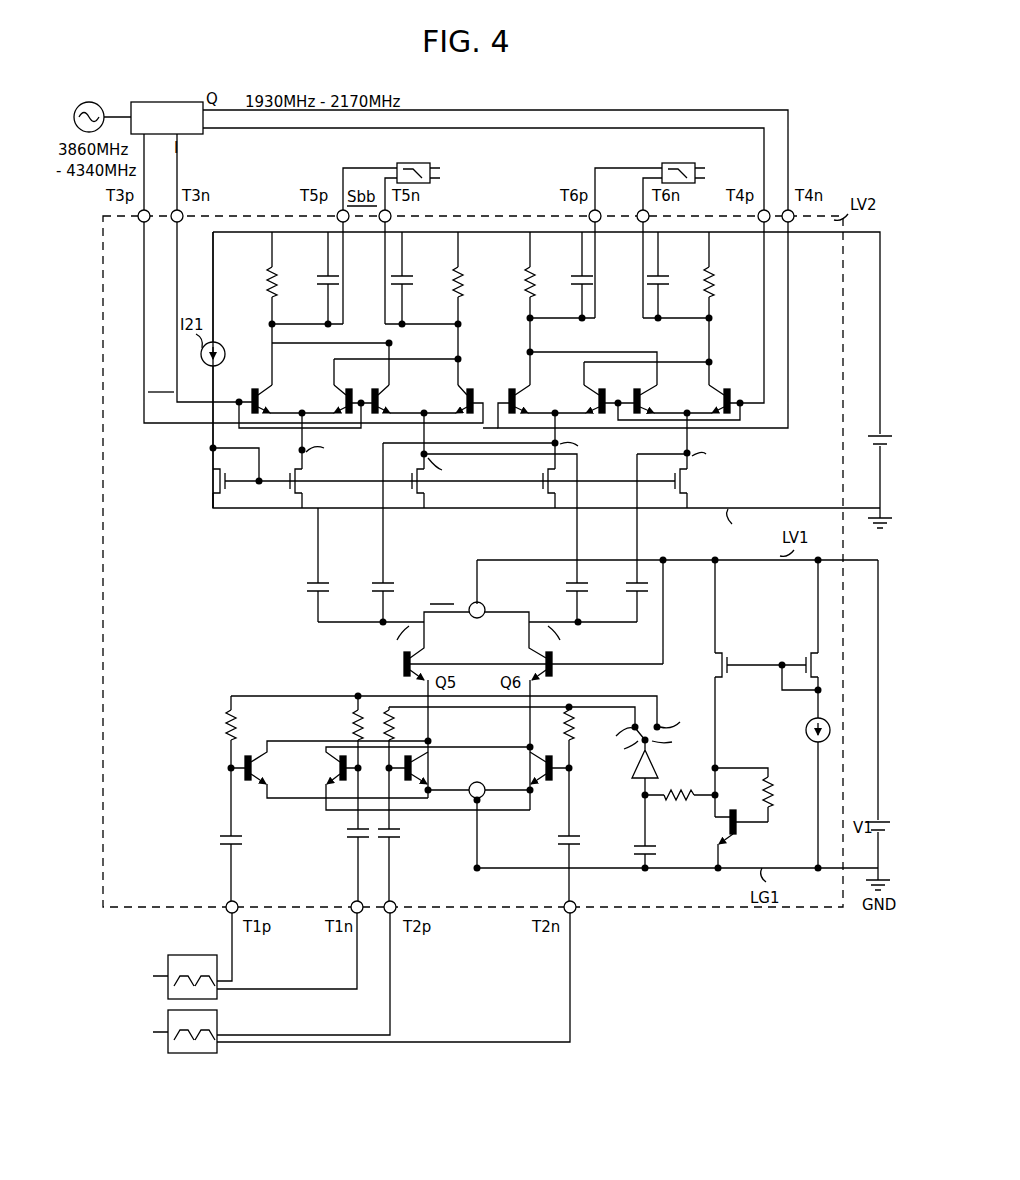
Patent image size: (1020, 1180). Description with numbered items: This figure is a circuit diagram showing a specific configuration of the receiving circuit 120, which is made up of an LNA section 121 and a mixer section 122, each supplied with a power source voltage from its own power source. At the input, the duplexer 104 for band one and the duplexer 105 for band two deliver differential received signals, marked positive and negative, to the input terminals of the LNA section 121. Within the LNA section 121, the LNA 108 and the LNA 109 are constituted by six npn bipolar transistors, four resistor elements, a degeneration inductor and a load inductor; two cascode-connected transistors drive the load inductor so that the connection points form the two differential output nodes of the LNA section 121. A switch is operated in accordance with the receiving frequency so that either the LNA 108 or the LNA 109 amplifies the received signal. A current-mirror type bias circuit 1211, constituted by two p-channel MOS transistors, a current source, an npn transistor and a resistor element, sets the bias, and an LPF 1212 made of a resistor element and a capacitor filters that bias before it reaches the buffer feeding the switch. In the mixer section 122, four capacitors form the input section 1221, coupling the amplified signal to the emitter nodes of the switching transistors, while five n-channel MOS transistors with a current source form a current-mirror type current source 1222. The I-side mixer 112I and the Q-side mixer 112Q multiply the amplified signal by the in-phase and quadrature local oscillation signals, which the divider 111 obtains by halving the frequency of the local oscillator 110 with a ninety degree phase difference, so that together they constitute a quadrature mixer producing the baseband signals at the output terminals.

The local oscillator 110 is at (92, 102).
The divider 111 is at (164, 102).
The I-side mixer 112I is at (378, 332).
The Q-side mixer 112Q is at (636, 332).
The receiving circuit 120 is at (100, 600).
The LNA section 121 is at (202, 688).
The mixer section 122 is at (194, 504).
The input section 1221 is at (232, 598).
The current source 1222 is at (248, 523).
The bias circuit 1211 is at (766, 739).
The LPF 1212 is at (660, 880).
The LNA 108 is at (292, 816).
The LNA 109 is at (440, 836).
The duplexer 104 is at (180, 952).
The duplexer 105 is at (180, 1054).